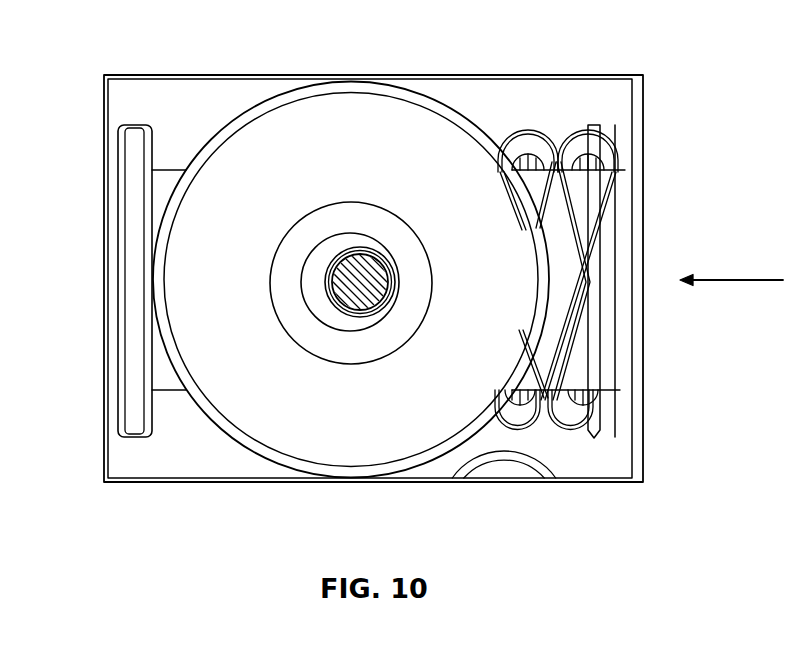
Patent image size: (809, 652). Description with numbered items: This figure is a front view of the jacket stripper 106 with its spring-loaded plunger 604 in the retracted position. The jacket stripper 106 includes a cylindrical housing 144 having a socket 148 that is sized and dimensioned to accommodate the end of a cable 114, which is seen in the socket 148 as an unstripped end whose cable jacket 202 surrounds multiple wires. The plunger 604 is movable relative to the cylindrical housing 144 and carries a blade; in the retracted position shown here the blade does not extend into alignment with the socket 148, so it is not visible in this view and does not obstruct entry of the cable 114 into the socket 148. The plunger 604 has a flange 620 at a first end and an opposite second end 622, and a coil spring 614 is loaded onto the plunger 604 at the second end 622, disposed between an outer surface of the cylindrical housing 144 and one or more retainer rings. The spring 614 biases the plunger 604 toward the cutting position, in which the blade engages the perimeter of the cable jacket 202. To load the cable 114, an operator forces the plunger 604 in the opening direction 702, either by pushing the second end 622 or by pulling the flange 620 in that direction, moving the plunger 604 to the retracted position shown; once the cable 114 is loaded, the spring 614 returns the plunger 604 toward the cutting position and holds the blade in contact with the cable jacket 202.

The jacket stripper 106 is at (252, 54).
The cable 114 is at (359, 282).
The cylindrical housing 144 is at (410, 420).
The socket 148 is at (349, 228).
The cable jacket 202 is at (331, 297).
The plunger 604 is at (573, 185).
The coil spring 614 is at (520, 142).
The flange 620 is at (133, 142).
The second end 622 is at (643, 193).
The opening direction 702 is at (733, 280).